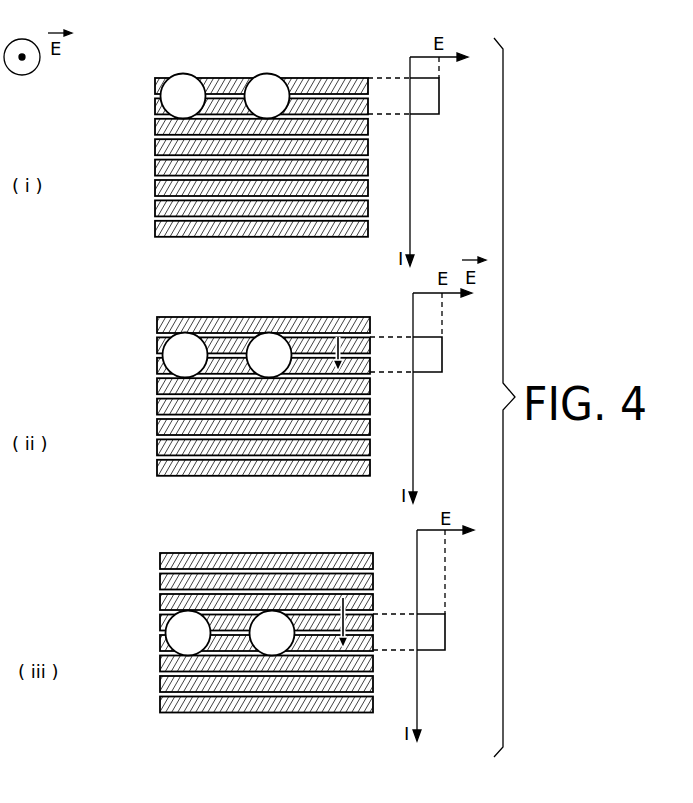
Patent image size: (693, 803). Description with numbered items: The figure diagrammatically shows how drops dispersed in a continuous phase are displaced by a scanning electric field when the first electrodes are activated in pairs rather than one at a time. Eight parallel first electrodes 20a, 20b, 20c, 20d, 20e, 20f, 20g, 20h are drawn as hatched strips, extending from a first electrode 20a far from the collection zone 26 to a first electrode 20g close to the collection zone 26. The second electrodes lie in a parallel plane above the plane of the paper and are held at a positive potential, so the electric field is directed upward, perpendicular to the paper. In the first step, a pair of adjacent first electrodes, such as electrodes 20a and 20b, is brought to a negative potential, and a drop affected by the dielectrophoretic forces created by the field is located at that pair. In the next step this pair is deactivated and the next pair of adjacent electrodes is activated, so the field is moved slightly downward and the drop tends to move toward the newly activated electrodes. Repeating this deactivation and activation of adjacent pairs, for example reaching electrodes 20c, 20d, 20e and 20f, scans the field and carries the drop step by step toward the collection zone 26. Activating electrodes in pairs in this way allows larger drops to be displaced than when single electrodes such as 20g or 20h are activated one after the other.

The first electrode 20a is at (155, 86).
The first electrode 20b is at (155, 106).
The first electrode 20c is at (155, 127).
The first electrode 20d is at (155, 147).
The first electrode 20e is at (157, 407).
The first electrode 20f is at (160, 664).
The first electrode 20g is at (157, 447).
The first electrode 20h is at (160, 704).
The collection zone 26 is at (237, 401).